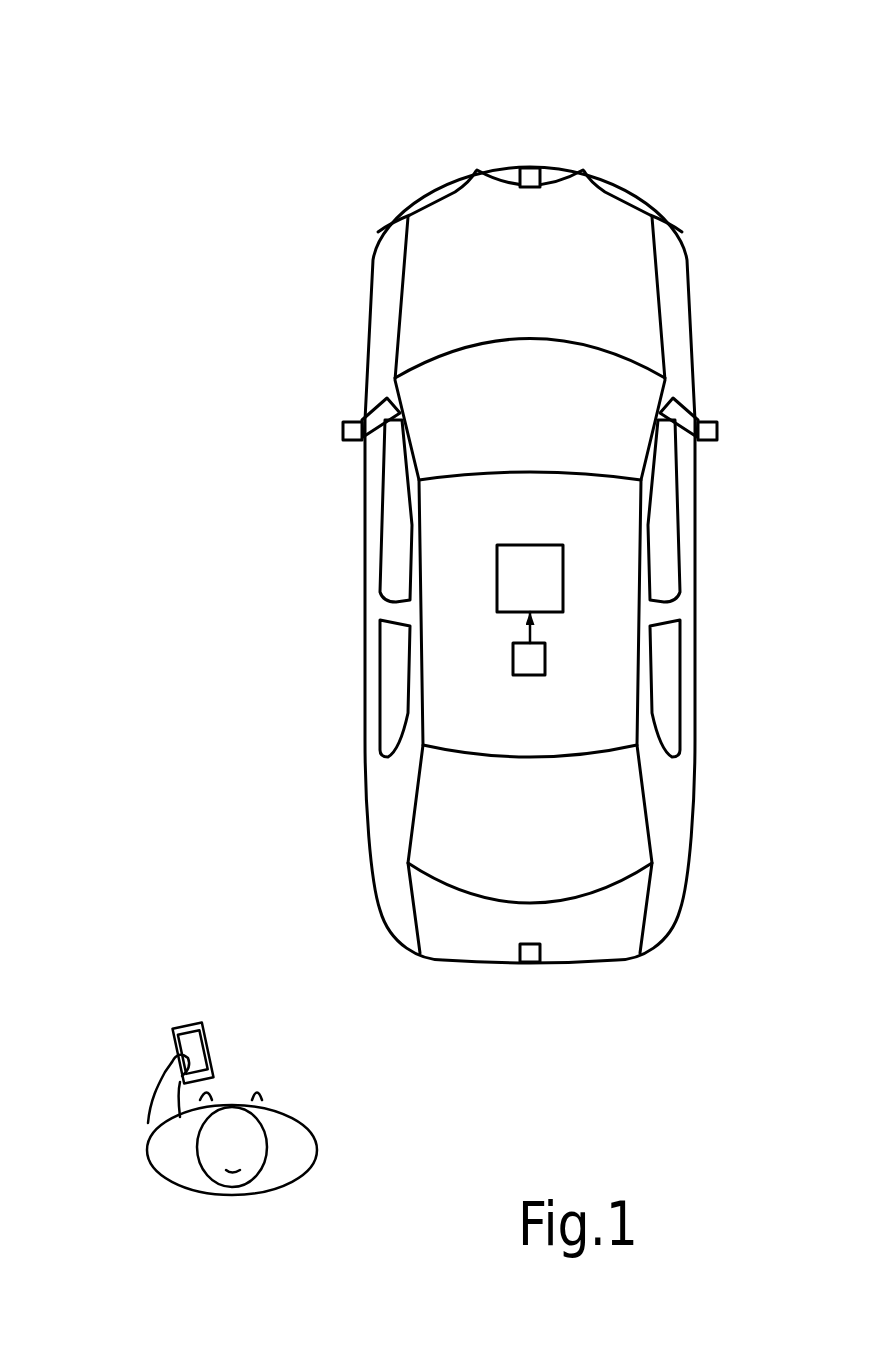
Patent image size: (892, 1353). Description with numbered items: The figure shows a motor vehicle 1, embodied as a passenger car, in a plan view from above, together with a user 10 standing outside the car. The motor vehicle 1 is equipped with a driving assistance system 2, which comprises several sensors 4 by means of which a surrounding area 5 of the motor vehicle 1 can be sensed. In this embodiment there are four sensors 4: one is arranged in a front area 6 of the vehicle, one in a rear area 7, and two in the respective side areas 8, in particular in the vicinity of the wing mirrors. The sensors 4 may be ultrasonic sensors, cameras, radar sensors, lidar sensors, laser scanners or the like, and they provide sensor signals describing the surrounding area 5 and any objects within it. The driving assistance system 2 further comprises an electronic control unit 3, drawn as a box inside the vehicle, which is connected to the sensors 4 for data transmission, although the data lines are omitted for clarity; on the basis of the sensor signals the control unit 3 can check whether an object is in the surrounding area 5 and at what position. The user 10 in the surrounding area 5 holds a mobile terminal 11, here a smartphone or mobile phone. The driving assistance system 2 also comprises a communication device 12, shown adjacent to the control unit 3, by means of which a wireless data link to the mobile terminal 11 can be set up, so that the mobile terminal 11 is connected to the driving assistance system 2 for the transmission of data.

The motor vehicle 1 is at (580, 168).
The driving assistance system 2 is at (422, 167).
The electronic control unit 3 is at (533, 545).
The sensor 4 is at (530, 168).
The surrounding area 5 is at (551, 42).
The front area 6 is at (503, 140).
The rear area 7 is at (458, 973).
The side area 8 is at (337, 447).
The user 10 is at (160, 1162).
The mobile terminal 11 is at (188, 1025).
The communication device 12 is at (530, 675).